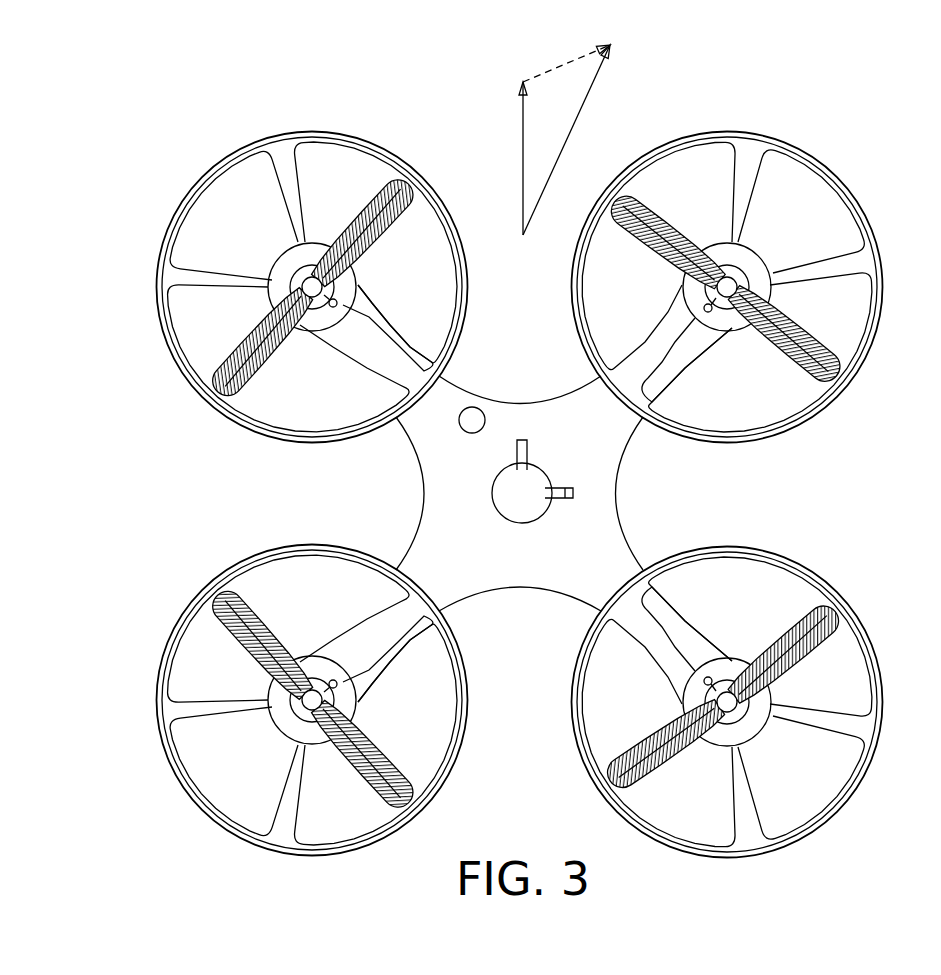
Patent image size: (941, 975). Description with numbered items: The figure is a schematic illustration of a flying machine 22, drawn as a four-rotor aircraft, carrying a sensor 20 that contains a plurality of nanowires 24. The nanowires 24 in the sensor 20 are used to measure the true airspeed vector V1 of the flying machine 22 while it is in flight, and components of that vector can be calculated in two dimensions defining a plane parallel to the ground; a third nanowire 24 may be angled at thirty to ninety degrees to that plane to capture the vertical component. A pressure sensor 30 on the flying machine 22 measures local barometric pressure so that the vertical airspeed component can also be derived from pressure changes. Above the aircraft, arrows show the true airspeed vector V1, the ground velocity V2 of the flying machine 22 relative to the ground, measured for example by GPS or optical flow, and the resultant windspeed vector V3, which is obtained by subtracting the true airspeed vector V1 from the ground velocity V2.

The sensor 20 is at (509, 517).
The flying machine 22 is at (310, 489).
The nanowires 24 is at (523, 440).
The pressure sensor 30 is at (479, 410).
The true airspeed vector V1 is at (523, 180).
The ground velocity V2 is at (578, 117).
The resultant windspeed vector V3 is at (545, 72).